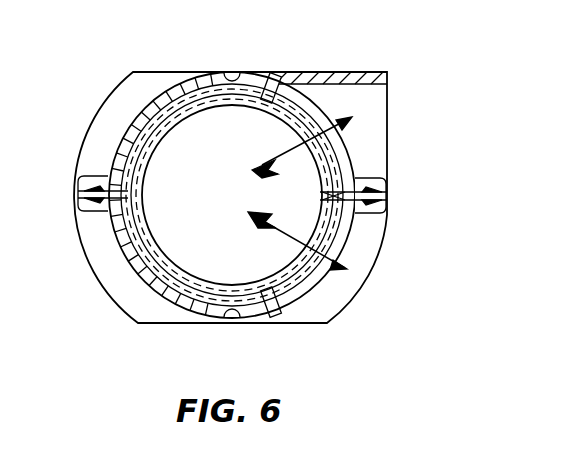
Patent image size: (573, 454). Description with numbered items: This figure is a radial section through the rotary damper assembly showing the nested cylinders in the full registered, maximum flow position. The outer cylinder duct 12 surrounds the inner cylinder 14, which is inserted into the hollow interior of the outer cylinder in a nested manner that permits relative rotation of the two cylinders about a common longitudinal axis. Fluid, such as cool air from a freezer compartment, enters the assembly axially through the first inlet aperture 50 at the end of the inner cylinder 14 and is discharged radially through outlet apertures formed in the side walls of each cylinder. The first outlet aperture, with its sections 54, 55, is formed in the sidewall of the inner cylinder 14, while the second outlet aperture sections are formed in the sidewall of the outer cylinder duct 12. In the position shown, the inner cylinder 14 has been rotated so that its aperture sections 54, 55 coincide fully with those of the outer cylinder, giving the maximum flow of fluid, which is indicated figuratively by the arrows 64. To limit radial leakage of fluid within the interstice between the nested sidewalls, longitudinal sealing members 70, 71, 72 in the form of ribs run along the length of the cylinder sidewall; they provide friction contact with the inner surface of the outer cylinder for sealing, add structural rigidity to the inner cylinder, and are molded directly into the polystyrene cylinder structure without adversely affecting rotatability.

The outer cylinder duct 12 is at (327, 84).
The inner cylinder 14 is at (360, 168).
The first inlet aperture 50 is at (232, 207).
The first outlet aperture section 54 is at (362, 298).
The first outlet aperture section 55 is at (360, 85).
The arrows 64 is at (262, 150).
The longitudinal sealing member 70 is at (262, 322).
The longitudinal sealing member 71 is at (360, 195).
The longitudinal sealing member 72 is at (273, 72).